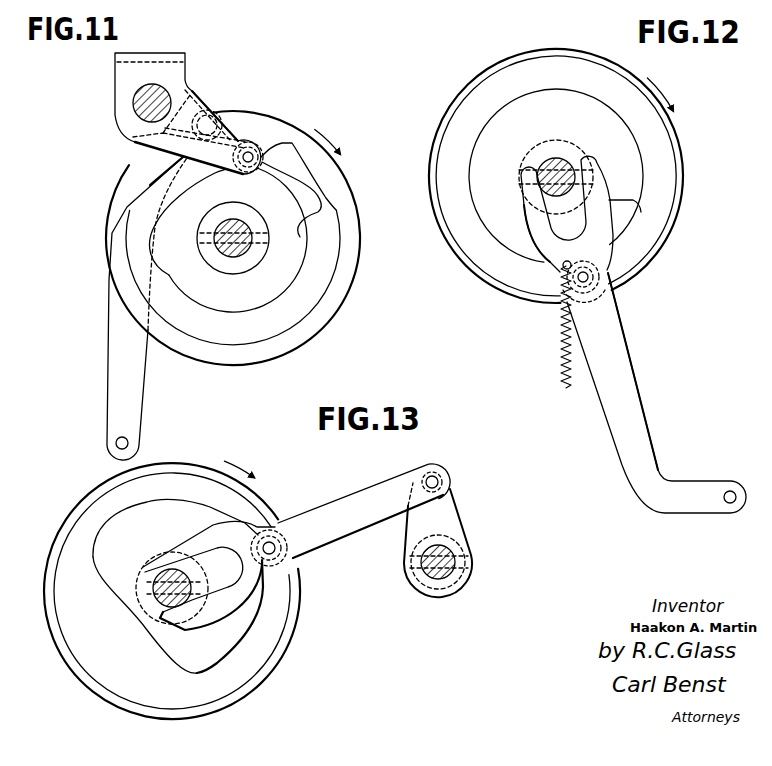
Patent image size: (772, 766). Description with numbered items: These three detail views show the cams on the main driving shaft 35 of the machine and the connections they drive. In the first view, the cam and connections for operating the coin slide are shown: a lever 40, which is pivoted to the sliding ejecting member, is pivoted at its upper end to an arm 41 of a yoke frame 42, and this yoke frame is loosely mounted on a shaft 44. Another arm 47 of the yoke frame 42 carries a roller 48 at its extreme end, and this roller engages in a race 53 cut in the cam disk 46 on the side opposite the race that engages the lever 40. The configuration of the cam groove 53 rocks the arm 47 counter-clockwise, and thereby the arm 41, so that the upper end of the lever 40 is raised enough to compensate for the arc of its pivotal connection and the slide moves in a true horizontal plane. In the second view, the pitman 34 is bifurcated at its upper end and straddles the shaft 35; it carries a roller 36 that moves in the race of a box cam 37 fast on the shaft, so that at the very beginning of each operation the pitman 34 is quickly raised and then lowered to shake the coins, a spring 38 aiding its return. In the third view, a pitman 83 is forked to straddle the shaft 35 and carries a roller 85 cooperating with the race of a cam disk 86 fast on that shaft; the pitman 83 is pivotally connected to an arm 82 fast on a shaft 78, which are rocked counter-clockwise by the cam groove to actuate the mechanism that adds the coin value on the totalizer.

In FIG. 12, the pitman 34 is at (620, 357).
In FIG. 11, the main driving shaft 35 is at (248, 250).
In FIG. 12, the main driving shaft 35 is at (538, 169).
In FIG. 13, the main driving shaft 35 is at (152, 581).
In FIG. 12, the roller 36 is at (597, 274).
In FIG. 12, the box cam 37 is at (663, 230).
In FIG. 12, the spring 38 is at (560, 328).
In FIG. 11, the lever 40 is at (138, 370).
In FIG. 11, the arm 41 is at (173, 142).
In FIG. 11, the yoke frame 42 is at (163, 58).
In FIG. 11, the shaft 44 is at (143, 105).
In FIG. 11, the cam disk 46 is at (347, 197).
In FIG. 11, the arm 47 is at (188, 95).
In FIG. 11, the roller 48 is at (236, 163).
In FIG. 11, the race 53 is at (333, 267).
In FIG. 13, the shaft 78 is at (448, 575).
In FIG. 13, the arm 82 is at (448, 512).
In FIG. 13, the pitman 83 is at (345, 503).
In FIG. 13, the roller 85 is at (273, 532).
In FIG. 13, the cam disk 86 is at (70, 643).